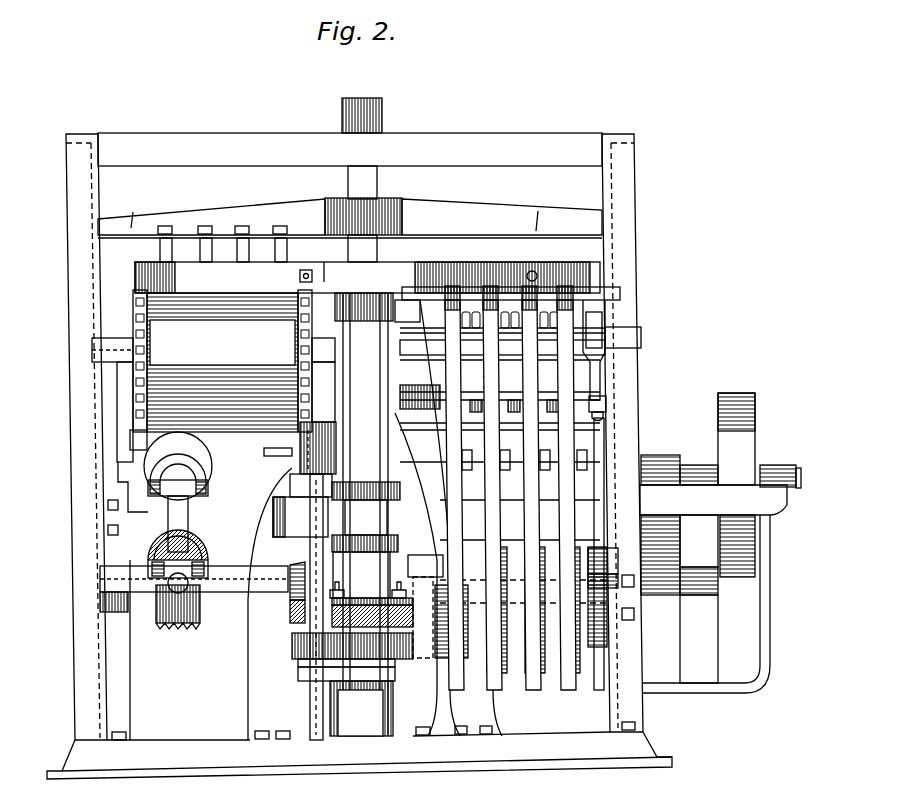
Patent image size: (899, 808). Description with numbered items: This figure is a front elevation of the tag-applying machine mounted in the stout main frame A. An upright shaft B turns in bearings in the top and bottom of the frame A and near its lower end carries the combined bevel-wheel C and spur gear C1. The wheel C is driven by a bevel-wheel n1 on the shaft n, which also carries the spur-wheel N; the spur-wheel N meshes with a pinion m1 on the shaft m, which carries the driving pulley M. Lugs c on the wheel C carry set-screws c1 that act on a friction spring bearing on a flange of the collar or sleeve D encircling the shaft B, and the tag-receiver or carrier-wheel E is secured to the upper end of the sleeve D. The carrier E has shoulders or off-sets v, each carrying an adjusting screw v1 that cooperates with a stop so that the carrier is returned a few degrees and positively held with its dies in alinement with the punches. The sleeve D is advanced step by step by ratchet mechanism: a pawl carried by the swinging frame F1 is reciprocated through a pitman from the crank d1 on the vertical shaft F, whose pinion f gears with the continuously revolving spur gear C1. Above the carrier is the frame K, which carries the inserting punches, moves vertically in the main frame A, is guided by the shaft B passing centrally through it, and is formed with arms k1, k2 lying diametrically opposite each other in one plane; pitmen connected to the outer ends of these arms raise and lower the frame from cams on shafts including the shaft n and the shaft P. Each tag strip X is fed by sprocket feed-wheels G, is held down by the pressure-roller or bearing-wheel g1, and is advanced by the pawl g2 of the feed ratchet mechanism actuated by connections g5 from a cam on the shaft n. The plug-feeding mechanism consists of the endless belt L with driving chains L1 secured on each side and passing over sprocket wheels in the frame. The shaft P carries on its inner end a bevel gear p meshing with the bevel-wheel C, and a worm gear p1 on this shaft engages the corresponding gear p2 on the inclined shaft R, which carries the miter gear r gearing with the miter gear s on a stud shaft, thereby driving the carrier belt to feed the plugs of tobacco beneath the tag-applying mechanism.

The main frame A is at (355, 456).
The frame K is at (320, 200).
The arm k1 is at (539, 207).
The arm k2 is at (129, 209).
The upright shaft B is at (368, 416).
The carrier-wheel E is at (367, 277).
The shoulder v is at (326, 262).
The adjusting screw v1 is at (306, 270).
The endless belt L is at (222, 362).
The driving chain L1 is at (133, 312).
The miter gear s is at (130, 441).
The miter gear r is at (205, 452).
The inclined shaft R is at (166, 508).
The gear p2 is at (208, 560).
The shaft P is at (196, 604).
The worm gear p1 is at (178, 617).
The bevel gear p is at (292, 606).
The sleeve D is at (340, 390).
The crank d1 is at (275, 500).
The swinging frame F1 is at (366, 482).
The vertical shaft F is at (290, 575).
The lug c is at (337, 581).
The set-screw c1 is at (399, 581).
The pinion f is at (305, 625).
The bevel-wheel C is at (292, 640).
The spur gear C1 is at (340, 668).
The bevel-wheel n1 is at (425, 555).
The pressure-roller g1 is at (560, 298).
The sprocket wheel G is at (560, 673).
The pawl g2 is at (600, 383).
The connections g5 is at (606, 430).
The shaft n is at (599, 690).
The tag strip X is at (526, 384).
The driving pulley M is at (736, 393).
The pinion m1 is at (660, 455).
The shaft m is at (800, 468).
The spur-wheel N is at (680, 640).